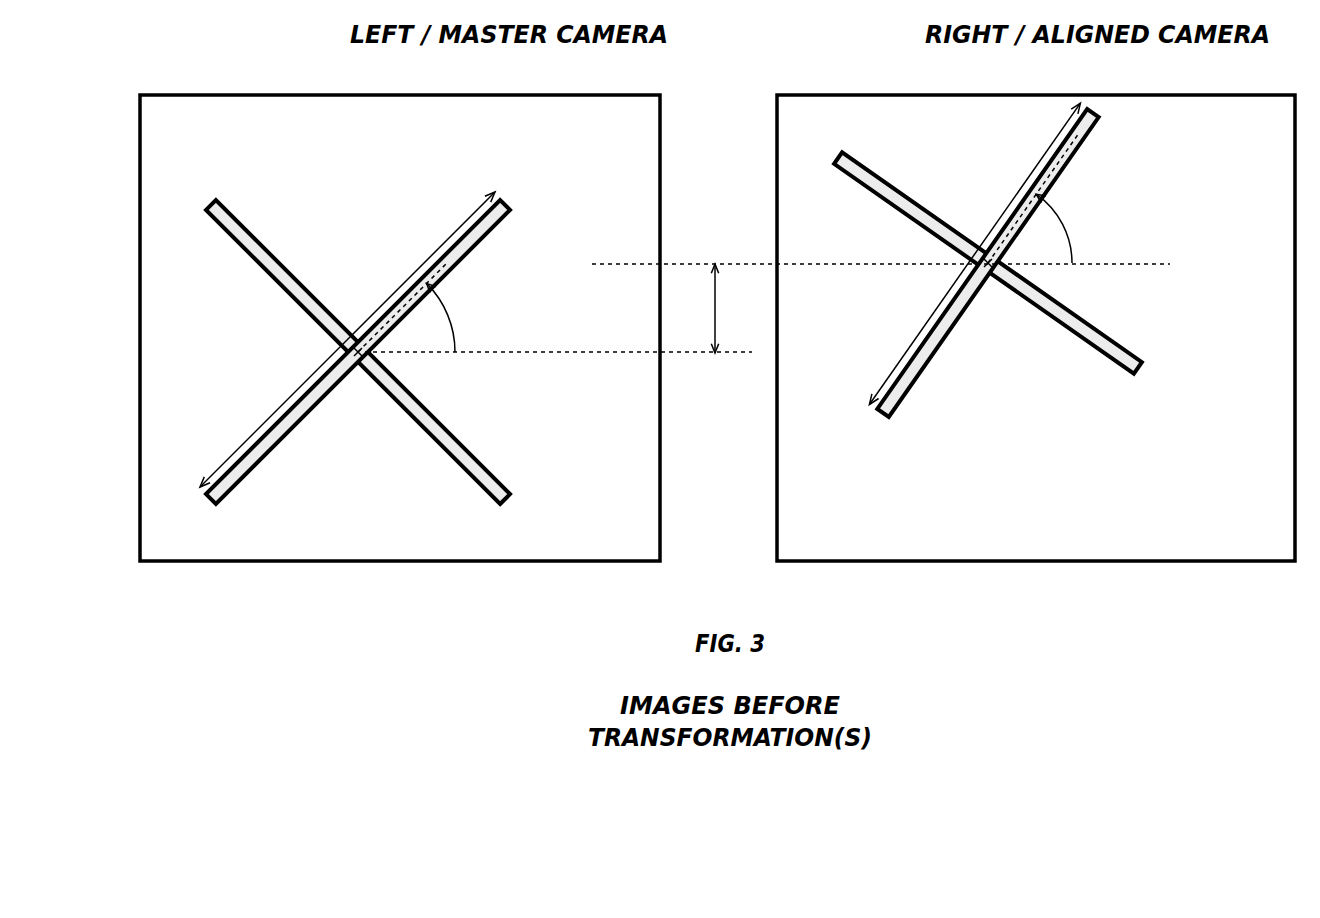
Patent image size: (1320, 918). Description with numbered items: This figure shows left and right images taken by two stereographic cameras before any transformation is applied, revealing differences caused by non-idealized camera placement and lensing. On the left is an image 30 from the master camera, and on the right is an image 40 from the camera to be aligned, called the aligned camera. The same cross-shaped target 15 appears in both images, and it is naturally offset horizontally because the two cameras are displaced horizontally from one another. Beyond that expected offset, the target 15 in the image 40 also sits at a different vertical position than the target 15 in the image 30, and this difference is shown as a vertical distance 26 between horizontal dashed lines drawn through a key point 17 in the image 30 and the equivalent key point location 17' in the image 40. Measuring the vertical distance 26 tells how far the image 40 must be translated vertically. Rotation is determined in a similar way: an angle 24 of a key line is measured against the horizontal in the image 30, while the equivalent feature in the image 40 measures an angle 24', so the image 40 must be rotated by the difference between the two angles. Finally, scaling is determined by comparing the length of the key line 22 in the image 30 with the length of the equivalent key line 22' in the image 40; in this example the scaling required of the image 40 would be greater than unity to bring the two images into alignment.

The image from master camera 30 is at (258, 94).
The image from aligned camera 40 is at (880, 94).
The target 15 is at (276, 262).
The key point 17 is at (353, 412).
The key point location in aligned image 17' is at (995, 327).
The key line 22 is at (340, 339).
The key line in aligned image 22' is at (974, 253).
The angle 24 is at (558, 314).
The angle in aligned image 24' is at (881, 221).
The vertical distance 26 is at (728, 323).